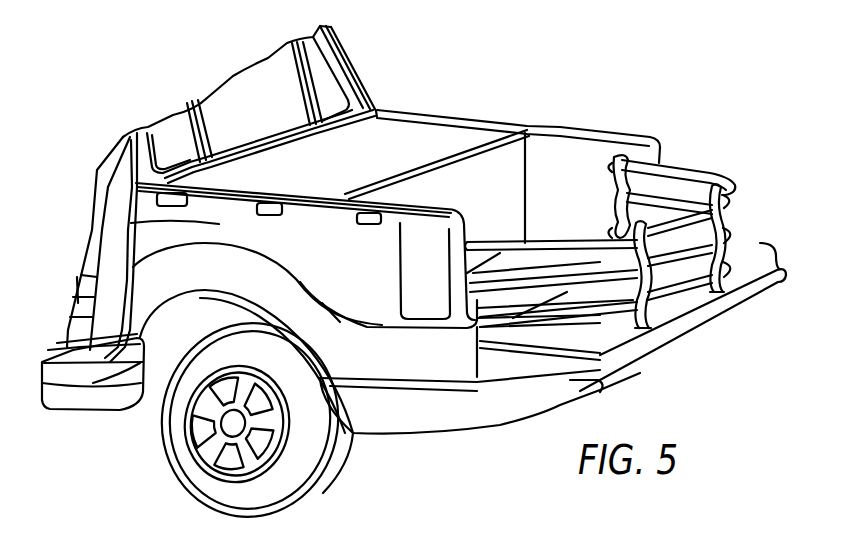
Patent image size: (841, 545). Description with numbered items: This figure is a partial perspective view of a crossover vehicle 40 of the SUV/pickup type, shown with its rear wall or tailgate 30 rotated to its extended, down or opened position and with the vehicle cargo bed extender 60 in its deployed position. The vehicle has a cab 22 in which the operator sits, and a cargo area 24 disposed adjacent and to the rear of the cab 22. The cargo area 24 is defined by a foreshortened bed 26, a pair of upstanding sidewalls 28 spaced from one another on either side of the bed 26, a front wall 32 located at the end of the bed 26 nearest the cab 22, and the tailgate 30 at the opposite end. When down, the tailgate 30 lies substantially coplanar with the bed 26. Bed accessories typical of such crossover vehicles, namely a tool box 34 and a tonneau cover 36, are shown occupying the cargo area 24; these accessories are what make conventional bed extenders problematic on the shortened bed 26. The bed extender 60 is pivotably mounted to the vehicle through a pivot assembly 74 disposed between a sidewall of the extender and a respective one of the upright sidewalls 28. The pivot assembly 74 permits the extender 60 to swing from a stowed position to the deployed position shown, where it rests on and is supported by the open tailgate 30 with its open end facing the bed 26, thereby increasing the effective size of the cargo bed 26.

The crossover vehicle 40 is at (106, 109).
The cab 22 is at (353, 63).
The front wall 32 is at (360, 91).
The tonneau cover 36 is at (440, 130).
The cargo area 24 is at (538, 100).
The sidewalls 28 is at (135, 224).
The tool box 34 is at (498, 191).
The bed 26 is at (545, 268).
The vehicle cargo bed extender 60 is at (693, 163).
The pivot assembly 74 is at (608, 189).
The tailgate 30 is at (762, 246).